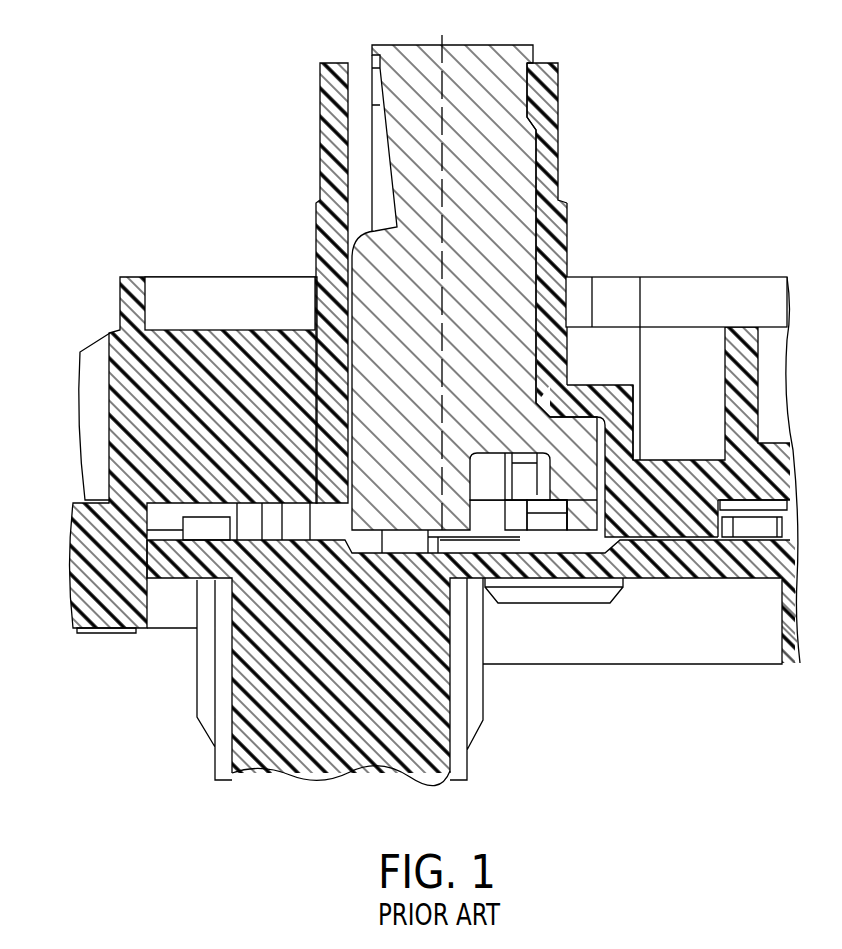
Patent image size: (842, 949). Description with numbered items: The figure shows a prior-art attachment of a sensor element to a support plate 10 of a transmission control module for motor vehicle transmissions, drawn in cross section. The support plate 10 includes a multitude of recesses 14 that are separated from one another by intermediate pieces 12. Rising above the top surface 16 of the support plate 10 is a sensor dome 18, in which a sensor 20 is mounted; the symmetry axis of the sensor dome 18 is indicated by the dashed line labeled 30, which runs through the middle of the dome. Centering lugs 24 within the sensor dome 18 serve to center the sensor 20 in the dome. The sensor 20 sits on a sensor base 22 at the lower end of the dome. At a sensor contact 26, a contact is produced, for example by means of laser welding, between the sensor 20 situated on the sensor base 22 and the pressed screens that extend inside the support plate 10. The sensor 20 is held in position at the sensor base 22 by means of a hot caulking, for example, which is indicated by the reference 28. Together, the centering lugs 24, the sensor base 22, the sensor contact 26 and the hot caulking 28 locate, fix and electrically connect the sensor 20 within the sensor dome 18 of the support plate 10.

The support plate 10 is at (130, 417).
The intermediate piece 12 is at (742, 350).
The recess 14 is at (665, 395).
The top surface 16 is at (248, 277).
The sensor dome 18 is at (548, 230).
The sensor 20 is at (505, 158).
The sensor base 22 is at (583, 507).
The centering lug 24 is at (533, 93).
The sensor contact 26 is at (520, 505).
The hot caulking 28 is at (547, 533).
The symmetry axis 30 is at (442, 157).